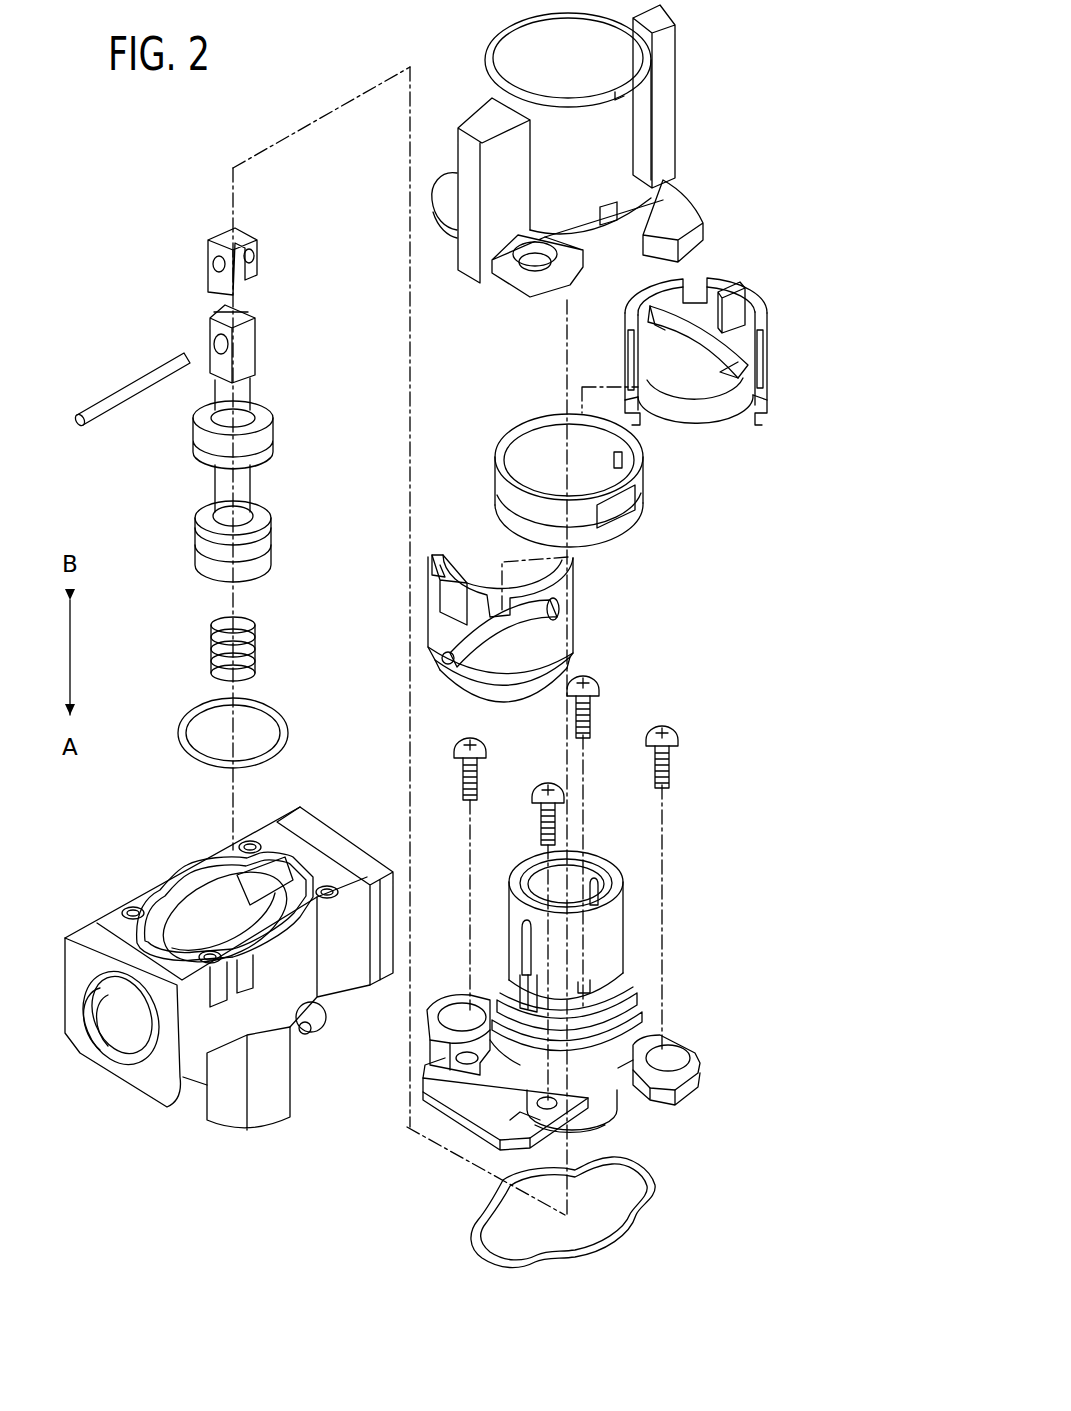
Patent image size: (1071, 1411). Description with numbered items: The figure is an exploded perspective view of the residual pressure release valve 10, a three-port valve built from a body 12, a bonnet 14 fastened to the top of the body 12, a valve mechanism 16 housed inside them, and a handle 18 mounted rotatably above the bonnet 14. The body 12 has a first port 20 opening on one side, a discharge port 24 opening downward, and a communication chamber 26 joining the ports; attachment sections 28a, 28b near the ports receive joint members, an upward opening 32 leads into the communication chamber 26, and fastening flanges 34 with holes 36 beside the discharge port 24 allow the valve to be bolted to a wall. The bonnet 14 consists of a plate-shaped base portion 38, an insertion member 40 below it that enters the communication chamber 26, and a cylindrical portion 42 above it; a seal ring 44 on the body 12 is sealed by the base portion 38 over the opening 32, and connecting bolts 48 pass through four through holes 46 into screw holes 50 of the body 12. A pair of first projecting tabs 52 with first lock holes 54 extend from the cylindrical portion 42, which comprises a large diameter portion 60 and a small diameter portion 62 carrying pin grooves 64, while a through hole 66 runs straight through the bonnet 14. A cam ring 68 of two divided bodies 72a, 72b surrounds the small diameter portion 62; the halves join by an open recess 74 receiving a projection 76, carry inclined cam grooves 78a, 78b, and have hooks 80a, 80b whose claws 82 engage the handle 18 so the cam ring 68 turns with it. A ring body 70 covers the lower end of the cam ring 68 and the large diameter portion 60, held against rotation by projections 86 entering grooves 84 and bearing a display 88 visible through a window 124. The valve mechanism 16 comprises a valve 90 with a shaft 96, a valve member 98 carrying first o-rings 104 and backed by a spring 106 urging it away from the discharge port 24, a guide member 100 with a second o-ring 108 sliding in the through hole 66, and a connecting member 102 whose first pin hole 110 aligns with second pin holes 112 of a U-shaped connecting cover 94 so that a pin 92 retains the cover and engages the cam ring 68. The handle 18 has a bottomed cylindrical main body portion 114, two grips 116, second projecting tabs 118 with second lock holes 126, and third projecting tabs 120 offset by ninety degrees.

The residual pressure release valve 10 is at (180, 121).
The body 12 is at (206, 1140).
The bonnet 14 is at (678, 928).
The valve mechanism 16 is at (182, 528).
The handle 18 is at (698, 134).
The first port 20 is at (127, 1010).
The discharge port 24 is at (283, 1113).
The communication chamber 26 is at (205, 915).
The attachment section 28a is at (75, 960).
The attachment section 28b is at (336, 828).
The opening 32 is at (210, 846).
The fastening flanges 34 is at (312, 1040).
The holes 36 is at (304, 1030).
The base portion 38 is at (482, 1118).
The insertion member 40 is at (565, 1118).
The cylindrical portion 42 is at (505, 953).
The seal ring 44 is at (640, 1215).
The through holes 46 is at (450, 1100).
The connecting bolts 48 is at (664, 722).
The screw holes 50 is at (133, 903).
The first projecting tabs 52 is at (430, 1040).
The first lock holes 54 is at (455, 1018).
The large diameter portion 60 is at (600, 1085).
The small diameter portion 62 is at (605, 955).
The pin grooves 64 is at (595, 885).
The through hole 66 is at (545, 868).
The cam ring 68 is at (758, 288).
The ring body 70 is at (520, 418).
The divided body 72a is at (445, 688).
The divided body 72b is at (767, 410).
The open recess 74 is at (760, 360).
The projection 76 is at (630, 355).
The cam groove 78a is at (512, 625).
The cam groove 78b is at (700, 345).
The hook 80a is at (450, 603).
The hook 80b is at (735, 298).
The claws 82 is at (458, 593).
The grooves 84 is at (466, 1063).
The projections 86 is at (622, 462).
The display 88 is at (618, 505).
The valve 90 is at (272, 385).
The pin 92 is at (110, 408).
The connecting cover 94 is at (230, 236).
The shaft 96 is at (253, 480).
The valve member 98 is at (225, 568).
The guide member 100 is at (272, 418).
The connecting member 102 is at (258, 326).
The first o-rings 104 is at (270, 572).
The spring 106 is at (215, 632).
The second o-ring 108 is at (205, 455).
The first pin hole 110 is at (220, 342).
The second pin holes 112 is at (214, 260).
The main body portion 114 is at (525, 42).
The grips 116 is at (670, 81).
The second projecting tabs 118 is at (508, 290).
The third projecting tabs 120 is at (440, 182).
The window 124 is at (625, 203).
The second lock holes 126 is at (535, 262).